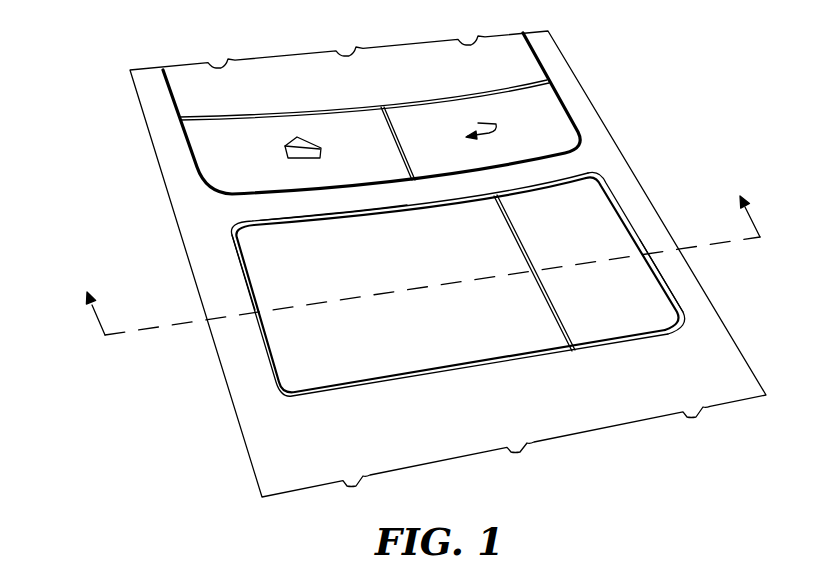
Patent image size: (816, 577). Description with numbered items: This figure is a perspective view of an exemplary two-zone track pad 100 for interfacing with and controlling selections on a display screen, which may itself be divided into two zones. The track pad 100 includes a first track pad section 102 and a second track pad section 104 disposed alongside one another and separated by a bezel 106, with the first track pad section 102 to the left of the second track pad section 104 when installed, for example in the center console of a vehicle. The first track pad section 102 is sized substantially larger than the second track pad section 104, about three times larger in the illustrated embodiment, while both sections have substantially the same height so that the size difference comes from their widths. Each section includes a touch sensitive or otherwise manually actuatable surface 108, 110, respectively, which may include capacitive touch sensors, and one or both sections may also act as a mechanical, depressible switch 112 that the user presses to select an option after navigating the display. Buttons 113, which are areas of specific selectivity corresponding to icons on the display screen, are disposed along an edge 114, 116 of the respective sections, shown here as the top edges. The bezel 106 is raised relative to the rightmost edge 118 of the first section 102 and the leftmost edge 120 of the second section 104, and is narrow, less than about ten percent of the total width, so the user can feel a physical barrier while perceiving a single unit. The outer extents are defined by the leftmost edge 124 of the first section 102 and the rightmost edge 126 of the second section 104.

The two-zone track pad 100 is at (80, 242).
The first track pad section 102 is at (300, 325).
The second track pad section 104 is at (590, 242).
The bezel 106 is at (515, 230).
The touch sensitive surface 108 is at (412, 360).
The touch sensitive surface 110 is at (627, 320).
The mechanical depressible switch 112 is at (542, 340).
The buttons 113 is at (407, 205).
The edge of first track pad section 114 is at (410, 205).
The edge of second track pad section 116 is at (567, 181).
The rightmost edge of first section 118 is at (545, 306).
The leftmost edge of second section 120 is at (548, 306).
The leftmost edge of first track pad section 124 is at (229, 262).
The rightmost edge of second track pad section 126 is at (676, 289).